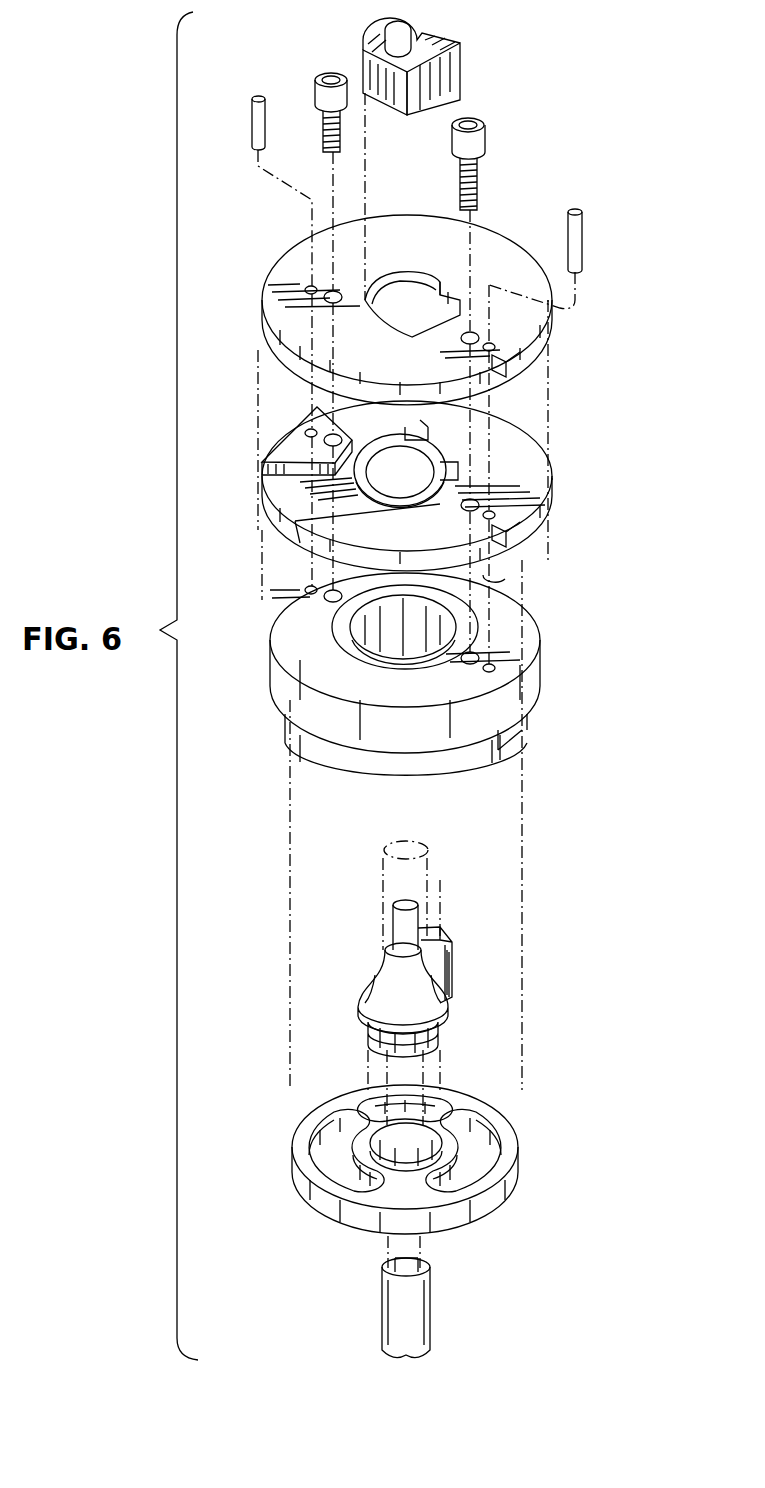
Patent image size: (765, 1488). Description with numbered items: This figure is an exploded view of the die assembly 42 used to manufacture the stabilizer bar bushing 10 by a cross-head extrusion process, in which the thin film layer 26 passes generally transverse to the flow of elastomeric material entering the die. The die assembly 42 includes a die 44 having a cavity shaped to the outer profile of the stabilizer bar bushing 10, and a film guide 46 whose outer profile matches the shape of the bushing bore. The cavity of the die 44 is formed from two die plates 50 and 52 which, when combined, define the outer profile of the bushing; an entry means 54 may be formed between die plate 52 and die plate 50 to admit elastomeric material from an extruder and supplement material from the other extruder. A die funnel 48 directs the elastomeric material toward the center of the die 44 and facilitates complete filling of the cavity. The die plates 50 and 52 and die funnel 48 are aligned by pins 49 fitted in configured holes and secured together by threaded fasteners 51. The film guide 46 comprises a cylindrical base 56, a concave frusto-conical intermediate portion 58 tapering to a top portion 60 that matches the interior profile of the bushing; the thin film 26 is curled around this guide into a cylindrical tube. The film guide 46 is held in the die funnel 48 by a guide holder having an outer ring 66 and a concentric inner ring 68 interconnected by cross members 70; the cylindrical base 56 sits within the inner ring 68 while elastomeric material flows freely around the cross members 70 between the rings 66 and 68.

The stabilizer bar bushing 10 is at (463, 47).
The thin film layer 26 is at (432, 1320).
The die assembly 42 is at (563, 463).
The die 44 is at (553, 397).
The film guide 46 is at (452, 966).
The die funnel 48 is at (543, 668).
The pins 49 is at (255, 97).
The die plate 50 is at (552, 323).
The threaded fasteners 51 is at (320, 73).
The die plate 52 is at (402, 486).
The entry means 54 is at (262, 490).
The cylindrical base 56 is at (440, 1030).
The concave frusto-conical intermediate portion 58 is at (448, 997).
The top portion 60 is at (420, 930).
The outer ring 66 is at (435, 1159).
The inner ring 68 is at (457, 1160).
The cross members 70 is at (485, 1113).